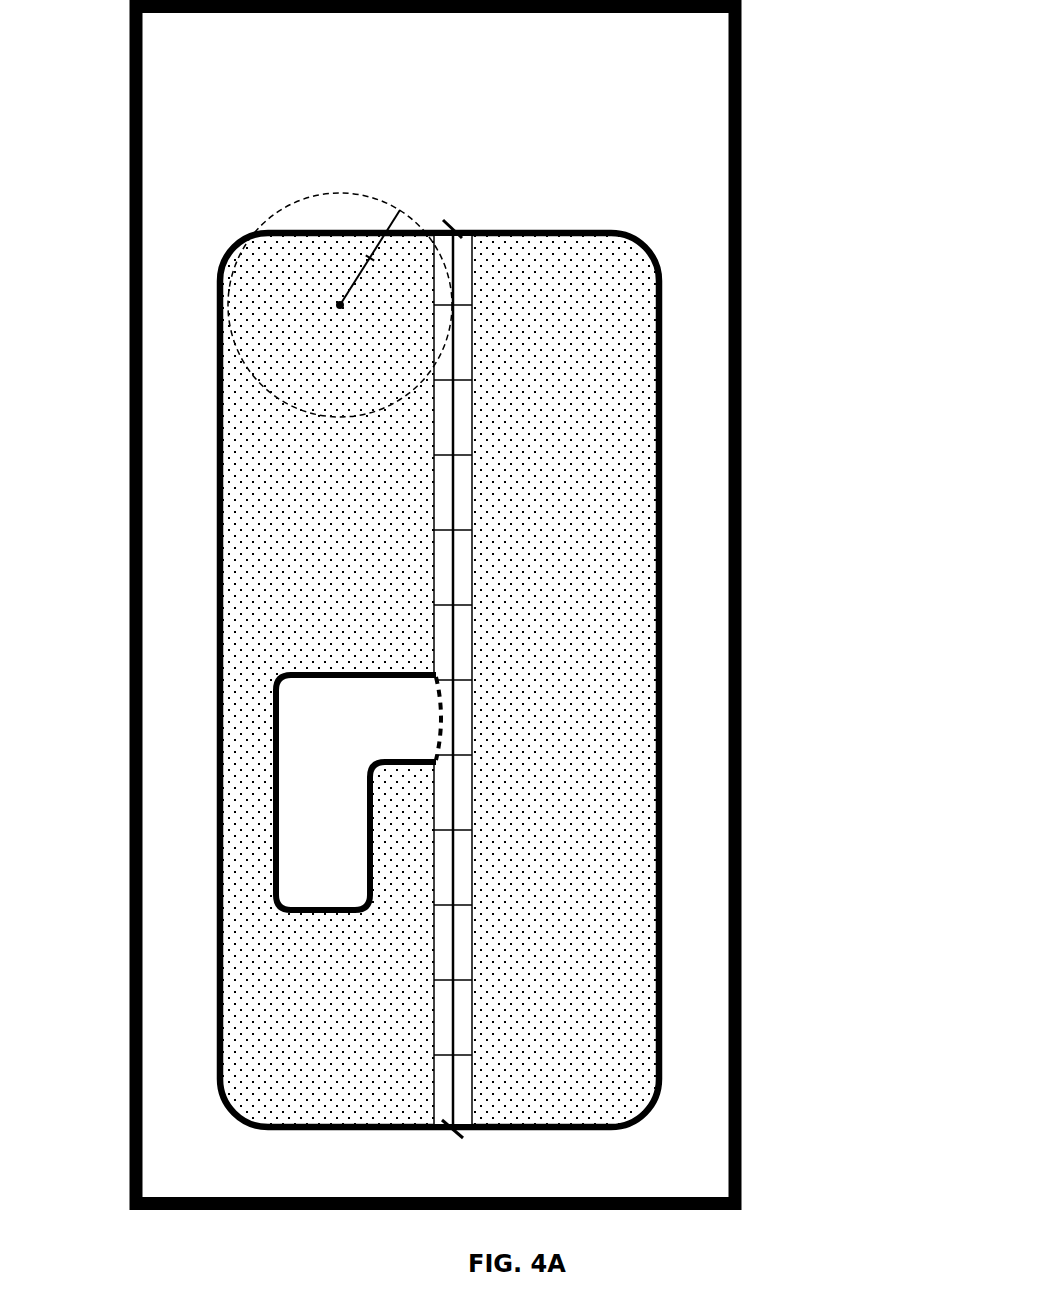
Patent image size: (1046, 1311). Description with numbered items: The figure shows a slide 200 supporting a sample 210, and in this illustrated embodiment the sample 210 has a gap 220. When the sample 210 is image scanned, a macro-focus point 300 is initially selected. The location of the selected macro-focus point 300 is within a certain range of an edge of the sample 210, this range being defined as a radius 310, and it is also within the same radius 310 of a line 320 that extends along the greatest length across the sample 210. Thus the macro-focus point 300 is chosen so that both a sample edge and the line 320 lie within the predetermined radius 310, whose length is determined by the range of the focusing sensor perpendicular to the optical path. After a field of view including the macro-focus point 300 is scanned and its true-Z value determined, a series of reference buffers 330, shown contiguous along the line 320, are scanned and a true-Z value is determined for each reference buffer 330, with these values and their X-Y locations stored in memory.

The slide 200 is at (742, 157).
The sample 210 is at (633, 555).
The gap 220 is at (303, 737).
The macro-focus point 300 is at (340, 305).
The radius 310 is at (397, 220).
The line along the greatest length across the sample 320 is at (454, 205).
The reference buffers 330 is at (472, 640).